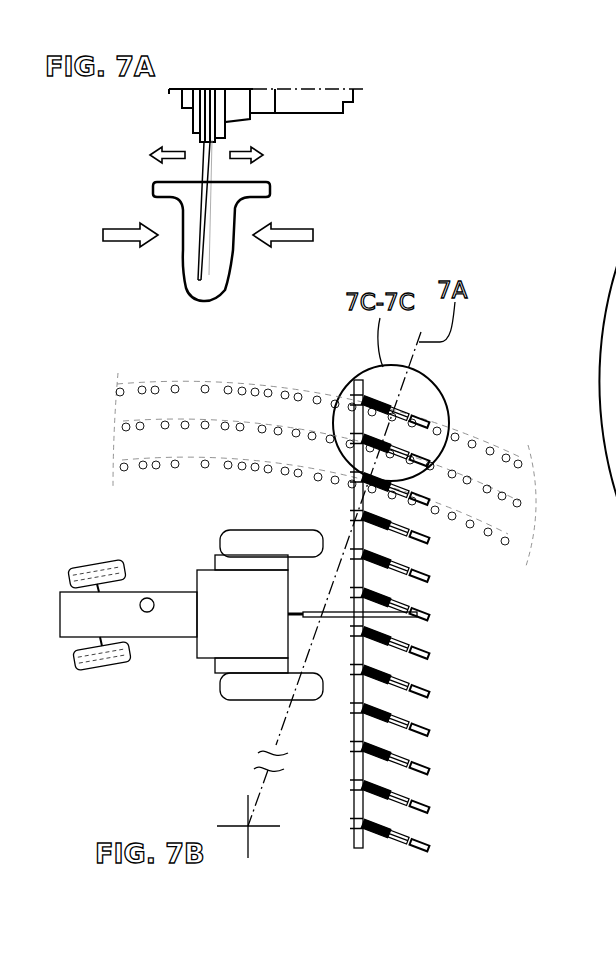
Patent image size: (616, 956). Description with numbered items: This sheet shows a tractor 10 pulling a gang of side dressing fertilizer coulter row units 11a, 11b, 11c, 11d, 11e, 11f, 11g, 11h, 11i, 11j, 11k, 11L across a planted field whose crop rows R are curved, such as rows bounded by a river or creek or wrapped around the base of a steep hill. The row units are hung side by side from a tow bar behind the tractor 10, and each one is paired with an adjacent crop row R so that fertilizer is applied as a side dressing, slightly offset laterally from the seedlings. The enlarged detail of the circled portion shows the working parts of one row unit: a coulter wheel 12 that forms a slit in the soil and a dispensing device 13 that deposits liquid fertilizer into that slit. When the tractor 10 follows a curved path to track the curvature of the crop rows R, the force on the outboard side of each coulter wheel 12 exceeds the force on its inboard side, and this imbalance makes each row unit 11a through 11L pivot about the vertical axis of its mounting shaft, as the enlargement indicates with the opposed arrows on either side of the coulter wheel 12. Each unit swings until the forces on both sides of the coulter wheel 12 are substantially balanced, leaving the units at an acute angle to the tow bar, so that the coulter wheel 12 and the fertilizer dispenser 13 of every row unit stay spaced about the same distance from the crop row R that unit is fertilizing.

In FIG. 7B, the tractor 10 is at (207, 660).
In FIG. 7B, the fertilizer coulter row unit 11a is at (435, 826).
In FIG. 7B, the fertilizer coulter row unit 11b is at (435, 787).
In FIG. 7B, the fertilizer coulter row unit 11c is at (435, 748).
In FIG. 7B, the fertilizer coulter row unit 11d is at (435, 709).
In FIG. 7B, the fertilizer coulter row unit 11e is at (435, 670).
In FIG. 7B, the fertilizer coulter row unit 11f is at (435, 631).
In FIG. 7B, the fertilizer coulter row unit 11g is at (430, 594).
In FIG. 7B, the fertilizer coulter row unit 11h is at (429, 554).
In FIG. 7B, the fertilizer coulter row unit 11i is at (424, 519).
In FIG. 7B, the fertilizer coulter row unit 11j is at (425, 481).
In FIG. 7B, the fertilizer coulter row unit 11k is at (429, 442).
In FIG. 7B, the fertilizer coulter row unit 11L is at (427, 401).
In FIG. 7A, the coulter wheel 12 is at (205, 158).
In FIG. 7A, the dispensing device 13 is at (212, 175).
In FIG. 7B, the crop row R is at (117, 392).